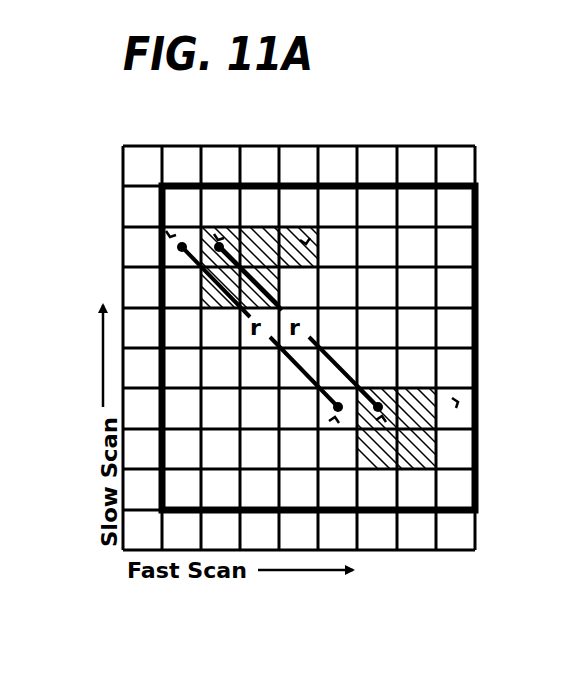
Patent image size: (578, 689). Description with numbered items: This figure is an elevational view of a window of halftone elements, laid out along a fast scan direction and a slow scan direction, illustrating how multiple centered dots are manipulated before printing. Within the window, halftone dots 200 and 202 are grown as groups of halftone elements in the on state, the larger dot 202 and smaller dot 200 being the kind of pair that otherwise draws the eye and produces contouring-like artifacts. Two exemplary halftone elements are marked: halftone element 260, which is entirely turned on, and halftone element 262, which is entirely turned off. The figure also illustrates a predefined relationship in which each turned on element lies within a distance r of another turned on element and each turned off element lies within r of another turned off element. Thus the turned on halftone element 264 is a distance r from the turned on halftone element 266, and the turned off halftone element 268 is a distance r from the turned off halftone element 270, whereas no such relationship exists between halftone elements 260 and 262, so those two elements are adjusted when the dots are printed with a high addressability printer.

The halftone dot 200 is at (417, 378).
The halftone dot 202 is at (252, 222).
The halftone element 260 is at (303, 238).
The halftone element 262 is at (456, 401).
The turned on halftone element 264 is at (214, 234).
The turned on halftone element 266 is at (382, 420).
The turned off halftone element 268 is at (166, 231).
The turned off halftone element 270 is at (332, 420).